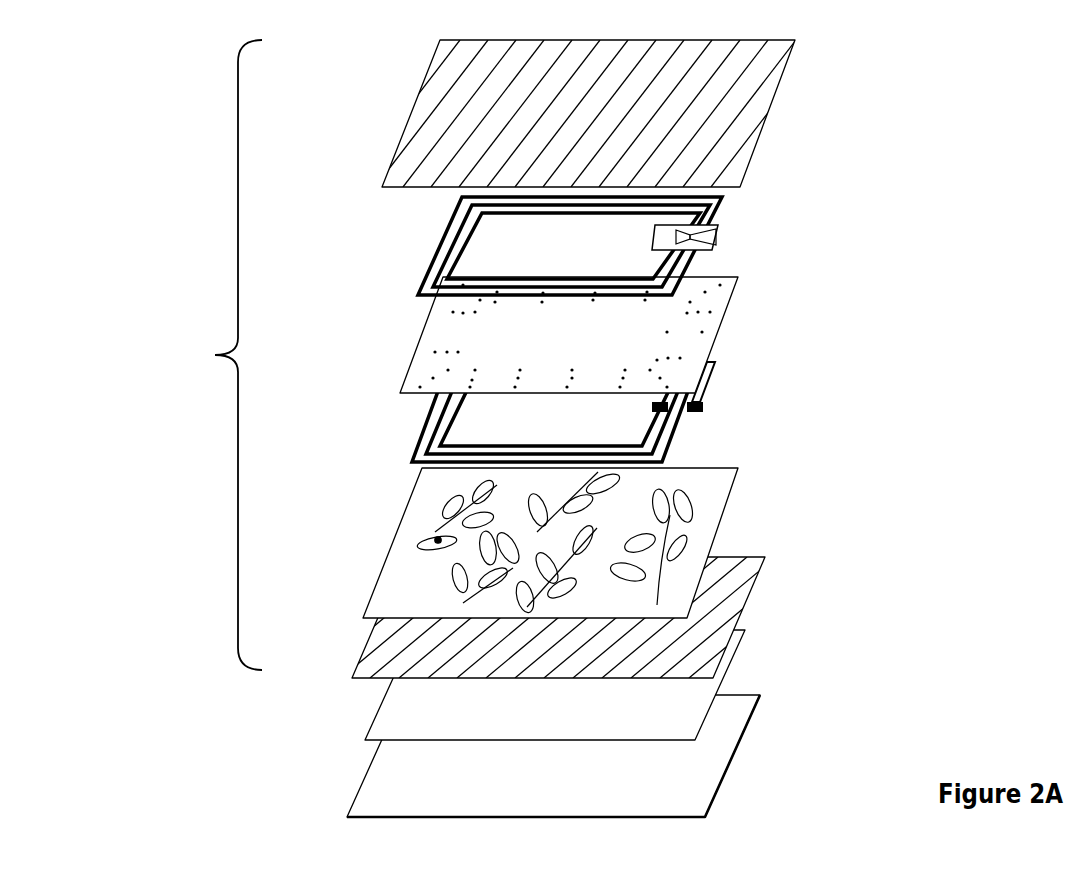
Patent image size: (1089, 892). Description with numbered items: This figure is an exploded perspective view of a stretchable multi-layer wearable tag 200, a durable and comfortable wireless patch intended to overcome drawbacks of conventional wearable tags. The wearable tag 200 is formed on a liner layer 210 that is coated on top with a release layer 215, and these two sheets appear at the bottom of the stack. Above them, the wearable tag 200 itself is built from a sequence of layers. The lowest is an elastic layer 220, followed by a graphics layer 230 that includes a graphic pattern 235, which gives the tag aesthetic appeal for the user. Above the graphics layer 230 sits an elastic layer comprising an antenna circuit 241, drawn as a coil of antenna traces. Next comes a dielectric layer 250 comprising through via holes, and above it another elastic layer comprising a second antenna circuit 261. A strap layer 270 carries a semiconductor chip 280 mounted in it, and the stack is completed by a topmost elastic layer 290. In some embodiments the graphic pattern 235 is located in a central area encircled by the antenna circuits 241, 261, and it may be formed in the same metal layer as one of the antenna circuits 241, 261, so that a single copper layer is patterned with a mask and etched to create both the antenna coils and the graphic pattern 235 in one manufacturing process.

The wearable tag 200 is at (212, 355).
The liner layer 210 is at (680, 772).
The release layer 215 is at (688, 697).
The elastic layer 220 is at (698, 622).
The graphics layer 230 is at (579, 542).
The graphic pattern 235 is at (435, 539).
The antenna circuit 241 is at (673, 435).
The dielectric layer 250 is at (438, 340).
The antenna circuit 261 is at (443, 247).
The strap layer 270 is at (708, 233).
The semiconductor chip 280 is at (684, 238).
The elastic layer 290 is at (735, 108).